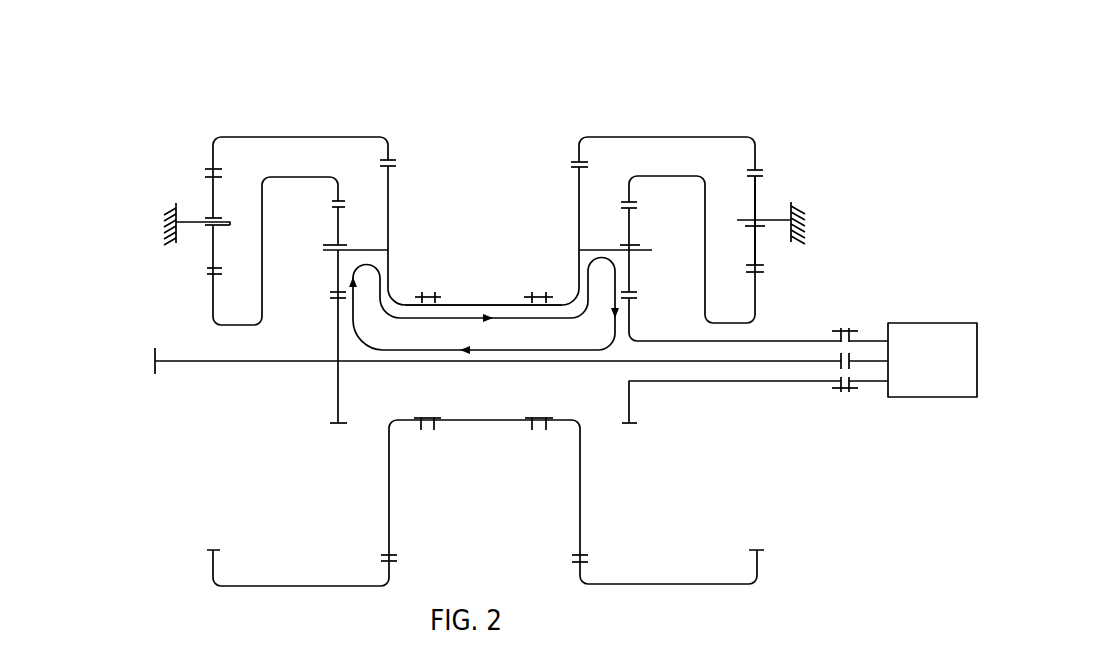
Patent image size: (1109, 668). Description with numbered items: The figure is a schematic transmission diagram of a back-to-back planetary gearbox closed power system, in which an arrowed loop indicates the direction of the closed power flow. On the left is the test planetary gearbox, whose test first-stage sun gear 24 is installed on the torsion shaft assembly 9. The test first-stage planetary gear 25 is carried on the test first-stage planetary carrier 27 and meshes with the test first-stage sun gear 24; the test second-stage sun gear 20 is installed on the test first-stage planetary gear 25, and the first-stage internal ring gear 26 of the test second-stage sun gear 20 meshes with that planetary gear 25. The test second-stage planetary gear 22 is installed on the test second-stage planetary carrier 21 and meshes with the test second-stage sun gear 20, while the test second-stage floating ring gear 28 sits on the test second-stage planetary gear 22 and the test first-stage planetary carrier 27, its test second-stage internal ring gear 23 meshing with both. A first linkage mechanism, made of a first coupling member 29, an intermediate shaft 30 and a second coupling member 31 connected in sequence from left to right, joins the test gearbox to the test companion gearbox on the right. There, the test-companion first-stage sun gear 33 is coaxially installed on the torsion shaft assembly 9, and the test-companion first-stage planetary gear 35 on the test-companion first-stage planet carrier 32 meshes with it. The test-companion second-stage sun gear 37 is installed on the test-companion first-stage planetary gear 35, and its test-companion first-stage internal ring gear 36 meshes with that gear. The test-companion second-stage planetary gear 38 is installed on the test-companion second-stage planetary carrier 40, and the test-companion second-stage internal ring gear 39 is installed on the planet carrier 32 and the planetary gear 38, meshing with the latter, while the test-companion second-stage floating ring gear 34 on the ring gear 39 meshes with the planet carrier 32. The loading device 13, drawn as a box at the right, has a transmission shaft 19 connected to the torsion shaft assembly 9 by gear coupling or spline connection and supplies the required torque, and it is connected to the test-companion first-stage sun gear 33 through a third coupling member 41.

The torsion shaft assembly 9 is at (225, 361).
The loading device 13 is at (957, 362).
The transmission shaft 19 is at (877, 362).
The test second-stage sun gear 20 is at (208, 268).
The test second-stage planetary carrier 21 is at (207, 218).
The test second-stage planetary gear 22 is at (205, 177).
The test second-stage internal ring gear 23 is at (212, 168).
The test first-stage sun gear 24 is at (338, 297).
The test first-stage planetary gear 25 is at (336, 203).
The first-stage internal ring gear 26 is at (340, 200).
The test first-stage planetary carrier 27 is at (371, 250).
The test second-stage floating ring gear 28 is at (388, 160).
The first coupling member 29 is at (435, 297).
The intermediate shaft 30 is at (457, 305).
The second coupling member 31 is at (538, 297).
The test-companion first-stage planet carrier 32 is at (579, 250).
The test-companion first-stage sun gear 33 is at (629, 298).
The test-companion second-stage floating ring gear 34 is at (579, 160).
The test-companion first-stage planetary gear 35 is at (629, 202).
The test-companion first-stage internal ring gear 36 is at (630, 202).
The test-companion second-stage sun gear 37 is at (755, 273).
The test-companion second-stage planetary gear 38 is at (755, 176).
The test-companion second-stage internal ring gear 39 is at (755, 170).
The test-companion second-stage planetary carrier 40 is at (795, 212).
The third coupling member 41 is at (848, 333).